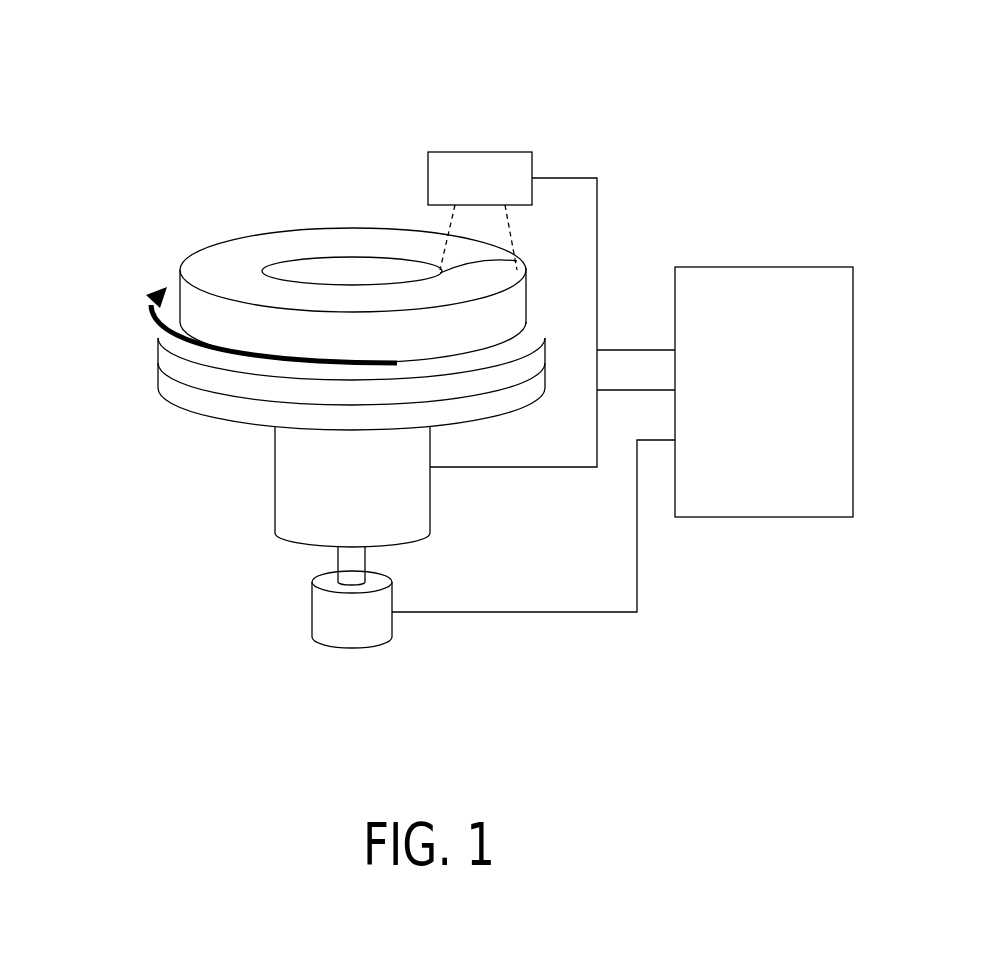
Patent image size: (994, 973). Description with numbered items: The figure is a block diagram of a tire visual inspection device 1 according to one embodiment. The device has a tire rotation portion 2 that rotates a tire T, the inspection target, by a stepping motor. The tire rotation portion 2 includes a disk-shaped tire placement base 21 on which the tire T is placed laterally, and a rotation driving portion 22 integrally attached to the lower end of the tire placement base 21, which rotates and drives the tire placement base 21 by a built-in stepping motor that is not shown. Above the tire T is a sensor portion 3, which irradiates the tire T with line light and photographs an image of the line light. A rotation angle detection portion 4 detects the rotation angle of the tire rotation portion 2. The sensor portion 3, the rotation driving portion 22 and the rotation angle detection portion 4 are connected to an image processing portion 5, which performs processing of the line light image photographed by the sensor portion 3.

The tire visual inspection device 1 is at (665, 106).
The tire T is at (287, 250).
The tire rotation portion 2 is at (108, 458).
The tire placement base 21 is at (257, 415).
The rotation driving portion 22 is at (285, 505).
The sensor portion 3 is at (457, 152).
The rotation angle detection portion 4 is at (380, 635).
The image processing portion 5 is at (725, 267).